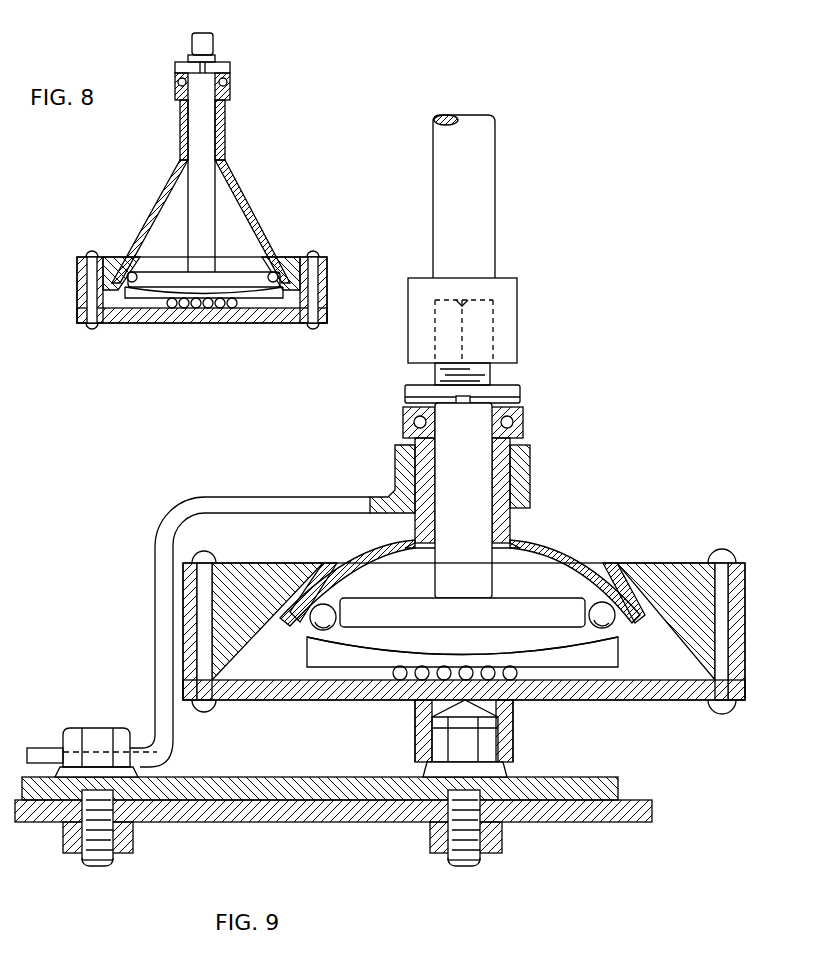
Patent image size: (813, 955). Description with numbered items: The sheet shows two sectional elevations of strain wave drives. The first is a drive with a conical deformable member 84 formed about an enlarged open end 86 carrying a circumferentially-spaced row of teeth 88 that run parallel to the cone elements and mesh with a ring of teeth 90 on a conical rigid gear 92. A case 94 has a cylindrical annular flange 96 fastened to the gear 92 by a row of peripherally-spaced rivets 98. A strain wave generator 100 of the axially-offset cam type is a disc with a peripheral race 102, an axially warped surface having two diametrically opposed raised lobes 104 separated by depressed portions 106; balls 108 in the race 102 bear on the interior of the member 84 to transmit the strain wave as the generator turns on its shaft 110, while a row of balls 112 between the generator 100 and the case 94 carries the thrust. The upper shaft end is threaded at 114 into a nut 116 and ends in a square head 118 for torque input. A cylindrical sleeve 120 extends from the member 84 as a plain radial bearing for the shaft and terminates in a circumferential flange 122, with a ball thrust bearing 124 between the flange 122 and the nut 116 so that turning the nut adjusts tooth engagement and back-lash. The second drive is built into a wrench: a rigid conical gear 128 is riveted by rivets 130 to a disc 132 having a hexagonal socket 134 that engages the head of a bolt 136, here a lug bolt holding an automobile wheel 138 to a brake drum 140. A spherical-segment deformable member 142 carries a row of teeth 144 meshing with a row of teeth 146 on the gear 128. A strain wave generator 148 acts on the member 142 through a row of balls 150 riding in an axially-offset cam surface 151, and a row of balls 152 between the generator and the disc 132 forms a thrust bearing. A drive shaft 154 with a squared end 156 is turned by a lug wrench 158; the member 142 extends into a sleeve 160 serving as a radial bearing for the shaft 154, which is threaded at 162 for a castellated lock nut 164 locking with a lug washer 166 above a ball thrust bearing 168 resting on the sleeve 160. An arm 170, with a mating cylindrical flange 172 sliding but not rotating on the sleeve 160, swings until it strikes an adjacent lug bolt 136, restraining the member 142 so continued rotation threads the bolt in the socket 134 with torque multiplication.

In FIG. 8, the conical deformable member 84 is at (246, 195).
In FIG. 8, the enlarged open end 86 is at (298, 300).
In FIG. 8, the row of teeth 88 is at (292, 265).
In FIG. 8, the ring of teeth 90 is at (123, 258).
In FIG. 8, the conical rigid gear 92 is at (327, 268).
In FIG. 8, the case 94 is at (170, 312).
In FIG. 8, the cylindrical annular flange 96 is at (322, 315).
In FIG. 8, the rivets 98 is at (318, 255).
In FIG. 8, the strain wave generator 100 is at (142, 296).
In FIG. 8, the peripheral race 102 is at (168, 294).
In FIG. 8, the raised lobes 104 is at (135, 280).
In FIG. 8, the depressed portions 106 is at (205, 296).
In FIG. 8, the balls 108 is at (132, 272).
In FIG. 8, the shaft 110 is at (208, 120).
In FIG. 8, the row of balls 112 is at (240, 312).
In FIG. 8, the threaded portion 114 is at (212, 57).
In FIG. 8, the nut 116 is at (228, 66).
In FIG. 8, the square head 118 is at (208, 36).
In FIG. 8, the cylindrical sleeve 120 is at (225, 136).
In FIG. 8, the circumferential flange 122 is at (230, 95).
In FIG. 8, the ball thrust bearing 124 is at (230, 80).
In FIG. 9, the rigid conical gear 128 is at (672, 565).
In FIG. 9, the rivets 130 is at (720, 617).
In FIG. 9, the disc 132 is at (643, 702).
In FIG. 9, the socket 134 is at (500, 748).
In FIG. 9, the bolt 136 is at (508, 774).
In FIG. 9, the automobile wheel 138 is at (300, 783).
In FIG. 9, the brake drum 140 is at (278, 818).
In FIG. 9, the deformable member 142 is at (548, 563).
In FIG. 9, the row of teeth 144 is at (608, 570).
In FIG. 9, the row of teeth 146 is at (283, 622).
In FIG. 9, the strain wave generator 148 is at (466, 626).
In FIG. 9, the row of balls 150 is at (330, 604).
In FIG. 9, the axially-offset cam surface 151 is at (482, 650).
In FIG. 9, the row of balls 152 is at (550, 665).
In FIG. 9, the drive shaft 154 is at (492, 572).
In FIG. 9, the squared end 156 is at (493, 312).
In FIG. 9, the lug wrench 158 is at (487, 213).
In FIG. 9, the sleeve 160 is at (510, 530).
In FIG. 9, the threaded portion 162 is at (490, 380).
In FIG. 9, the lock nut 164 is at (405, 393).
In FIG. 9, the lug washer 166 is at (456, 405).
In FIG. 9, the ball thrust bearing 168 is at (523, 418).
In FIG. 9, the arm 170 is at (292, 500).
In FIG. 9, the cylindrical flange 172 is at (527, 466).